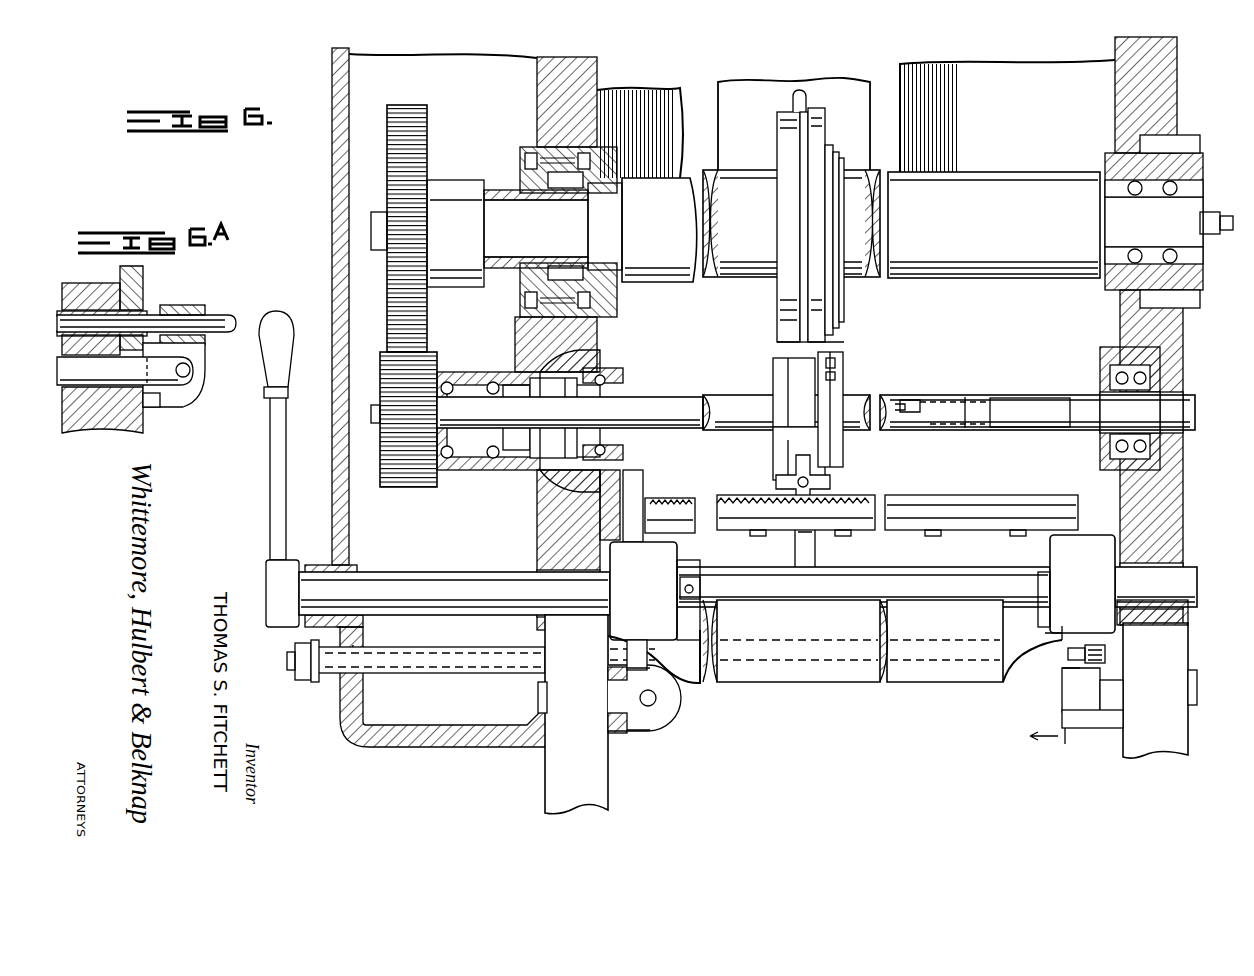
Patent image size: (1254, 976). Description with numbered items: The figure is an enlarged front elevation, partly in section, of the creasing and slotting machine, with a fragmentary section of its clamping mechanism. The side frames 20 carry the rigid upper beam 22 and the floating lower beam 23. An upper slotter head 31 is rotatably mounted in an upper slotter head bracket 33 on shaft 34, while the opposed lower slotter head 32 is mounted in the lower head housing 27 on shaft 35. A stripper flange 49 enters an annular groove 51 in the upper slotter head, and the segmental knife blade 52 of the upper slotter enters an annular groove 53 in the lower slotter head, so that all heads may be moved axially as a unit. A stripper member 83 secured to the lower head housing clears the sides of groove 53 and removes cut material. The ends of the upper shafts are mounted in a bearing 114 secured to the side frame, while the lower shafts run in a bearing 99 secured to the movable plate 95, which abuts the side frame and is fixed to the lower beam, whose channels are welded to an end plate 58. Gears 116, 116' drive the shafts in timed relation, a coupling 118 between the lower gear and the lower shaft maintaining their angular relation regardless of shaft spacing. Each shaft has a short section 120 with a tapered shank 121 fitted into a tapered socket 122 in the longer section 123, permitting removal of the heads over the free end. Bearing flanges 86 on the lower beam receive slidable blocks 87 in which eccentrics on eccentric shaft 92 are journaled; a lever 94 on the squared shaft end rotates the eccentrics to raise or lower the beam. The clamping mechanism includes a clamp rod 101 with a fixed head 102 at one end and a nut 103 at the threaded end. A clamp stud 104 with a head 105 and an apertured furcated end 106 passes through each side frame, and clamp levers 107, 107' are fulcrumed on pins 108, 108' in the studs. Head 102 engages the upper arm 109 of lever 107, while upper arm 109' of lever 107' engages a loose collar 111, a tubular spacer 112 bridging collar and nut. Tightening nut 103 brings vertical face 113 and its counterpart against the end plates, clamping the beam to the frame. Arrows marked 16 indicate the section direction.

In FIG. 6, the side frames 20 is at (583, 92).
In FIG. 6, the upper beam 22 is at (848, 85).
In FIG. 6, the upper slotter shaft 34 is at (988, 182).
In FIG. 6, the annular groove 51 is at (800, 138).
In FIG. 6, the upper slotter head bracket 33 is at (790, 318).
In FIG. 6, the upper slotter head 31 is at (828, 315).
In FIG. 6, the bearing 114 is at (617, 285).
In FIG. 6, the stripper flange 49 is at (780, 343).
In FIG. 6, the segmental knife blade 52 is at (830, 360).
In FIG. 6, the annular groove 53 is at (836, 372).
In FIG. 6, the lower head housing 27 is at (773, 373).
In FIG. 6, the lower slotter head 32 is at (838, 384).
In FIG. 6, the tapered shank 121 is at (981, 385).
In FIG. 6, the lower slotter shaft 35 is at (1010, 398).
In FIG. 6, the bearing 99 is at (622, 392).
In FIG. 6, the stripper member 83 is at (820, 457).
In FIG. 6, the tapered socket 122 is at (930, 432).
In FIG. 6, the longer shaft section 123 is at (968, 432).
In FIG. 6, the short shaft section 120 is at (1028, 432).
In FIG. 6, the end plate 58 is at (640, 510).
In FIG. 6, the lever 94 is at (283, 465).
In FIG. 6, the gear 116 is at (404, 449).
In FIG. 6, the gear 116' is at (427, 228).
In FIG. 6, the coupling 118 is at (512, 472).
In FIG. 6, the eccentric shaft 92 is at (956, 580).
In FIG. 6, the bearing flange 86 is at (637, 548).
In FIG. 6, the slidable block 87 is at (665, 618).
In FIG. 6, the section line 16 is at (1042, 682).
In FIG. 6, the fixed head 102 is at (1106, 655).
In FIG. 6, the nut 103 is at (305, 680).
In FIG. 6, the tubular spacer 112 is at (500, 664).
In FIG. 6A, the tubular spacer 112 is at (148, 314).
In FIG. 6, the stud head 105 is at (538, 697).
In FIG. 6A, the stud head 105 is at (93, 422).
In FIG. 6, the loose collar 111 is at (615, 690).
In FIG. 6A, the loose collar 111 is at (182, 306).
In FIG. 6, the upper arm 109' is at (687, 670).
In FIG. 6, the clamp rod 101 is at (836, 662).
In FIG. 6A, the clamp rod 101 is at (218, 318).
In FIG. 6, the floating lower beam 23 is at (946, 672).
In FIG. 6, the upper arm 109 is at (1015, 678).
In FIG. 6, the clamp stud 104 is at (658, 700).
In FIG. 6A, the clamp stud 104 is at (115, 420).
In FIG. 6, the clamp lever 107' is at (663, 704).
In FIG. 6, the vertical face 113 is at (612, 725).
In FIG. 6A, the vertical face 113 is at (152, 404).
In FIG. 6, the plate 95 is at (620, 735).
In FIG. 6, the pin 108' is at (668, 719).
In FIG. 6, the pin 108 is at (1030, 705).
In FIG. 6, the clamp lever 107 is at (1073, 748).
In FIG. 6A, the clamp lever 107 is at (198, 375).
In FIG. 6A, the furcated end 106 is at (190, 387).